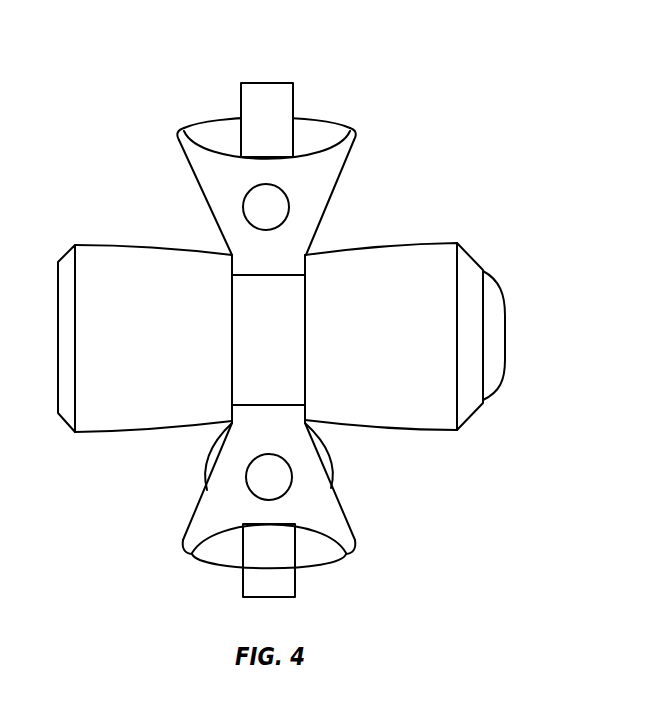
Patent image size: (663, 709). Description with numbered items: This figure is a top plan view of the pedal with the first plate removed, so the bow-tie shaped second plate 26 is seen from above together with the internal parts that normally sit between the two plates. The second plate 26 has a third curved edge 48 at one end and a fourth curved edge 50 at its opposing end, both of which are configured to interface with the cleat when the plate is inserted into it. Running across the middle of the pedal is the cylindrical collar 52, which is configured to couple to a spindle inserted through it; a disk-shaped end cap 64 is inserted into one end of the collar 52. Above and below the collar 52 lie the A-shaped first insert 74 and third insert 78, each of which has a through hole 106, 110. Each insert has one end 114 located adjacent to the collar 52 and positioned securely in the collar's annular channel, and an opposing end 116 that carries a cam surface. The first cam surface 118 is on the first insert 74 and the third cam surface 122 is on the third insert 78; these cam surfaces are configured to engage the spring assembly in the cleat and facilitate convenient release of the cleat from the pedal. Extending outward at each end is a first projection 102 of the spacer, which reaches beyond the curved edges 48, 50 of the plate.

The second plate 26 is at (215, 447).
The third curved edge 48 is at (317, 565).
The fourth curved edge 50 is at (323, 115).
The cylindrical collar 52 is at (435, 243).
The end cap 64 is at (503, 298).
The first insert 74 is at (320, 180).
The third insert 78 is at (347, 535).
The first projection 102 is at (278, 83).
The through hole 106 is at (262, 204).
The through hole 110 is at (265, 480).
The end of insert 114 is at (270, 275).
The opposing end of insert 116 is at (350, 137).
The first cam surface 118 is at (212, 140).
The third cam surface 122 is at (218, 540).